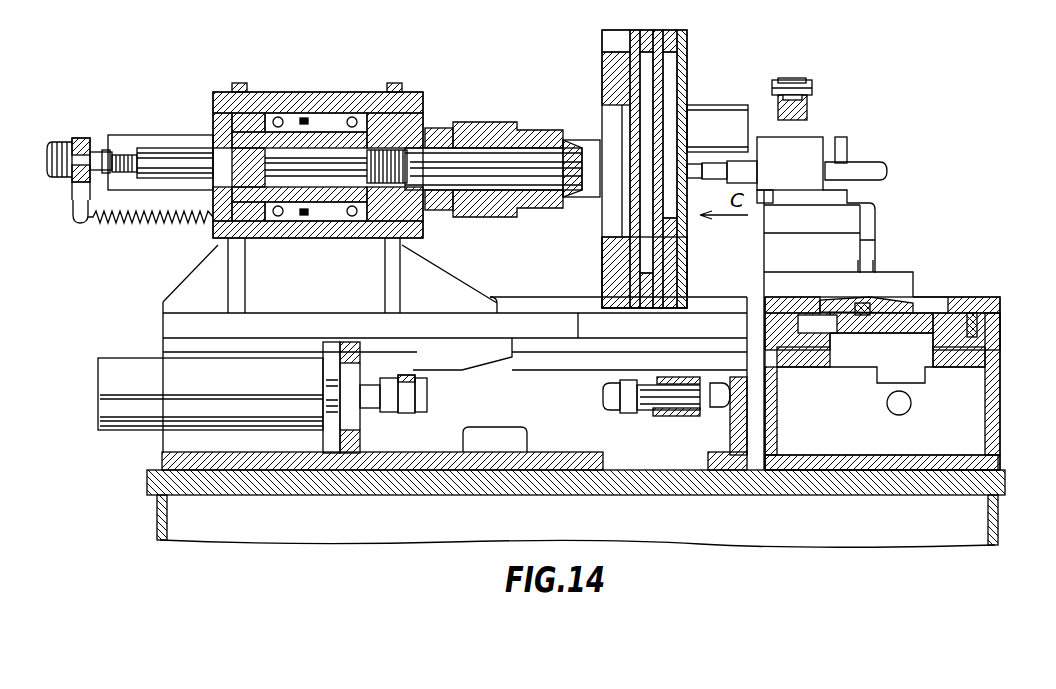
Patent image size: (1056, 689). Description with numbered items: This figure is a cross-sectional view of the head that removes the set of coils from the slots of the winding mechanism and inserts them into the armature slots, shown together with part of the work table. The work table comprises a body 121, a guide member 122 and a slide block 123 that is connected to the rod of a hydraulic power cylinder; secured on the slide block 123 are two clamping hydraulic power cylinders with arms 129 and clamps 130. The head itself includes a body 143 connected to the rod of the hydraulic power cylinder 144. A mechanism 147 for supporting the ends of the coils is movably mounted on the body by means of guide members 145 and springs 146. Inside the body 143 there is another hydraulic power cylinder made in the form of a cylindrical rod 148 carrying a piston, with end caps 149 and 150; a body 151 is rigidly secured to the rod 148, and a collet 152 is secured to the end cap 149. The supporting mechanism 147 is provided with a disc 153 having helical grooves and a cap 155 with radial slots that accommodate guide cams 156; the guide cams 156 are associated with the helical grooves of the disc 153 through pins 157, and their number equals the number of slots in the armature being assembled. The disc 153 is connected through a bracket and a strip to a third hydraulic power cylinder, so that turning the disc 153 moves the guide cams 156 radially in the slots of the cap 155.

The body 121 is at (1000, 413).
The guide member 122 is at (1000, 330).
The slide block 123 is at (928, 313).
The arm 129 is at (795, 78).
The clamp 130 is at (807, 112).
The body 143 is at (175, 323).
The hydraulic power cylinder 144 is at (157, 428).
The guide member 145 is at (155, 140).
The spring 146 is at (118, 227).
The mechanism for supporting the ends of the coils 147 is at (602, 88).
The cylindrical rod 148 is at (320, 95).
The end cap 149 is at (213, 113).
The end cap 150 is at (415, 117).
The body 151 is at (507, 120).
The collet 152 is at (560, 200).
The disc 153 is at (688, 47).
The cap 155 is at (680, 242).
The guide cam 156 is at (688, 95).
The pin 157 is at (688, 78).